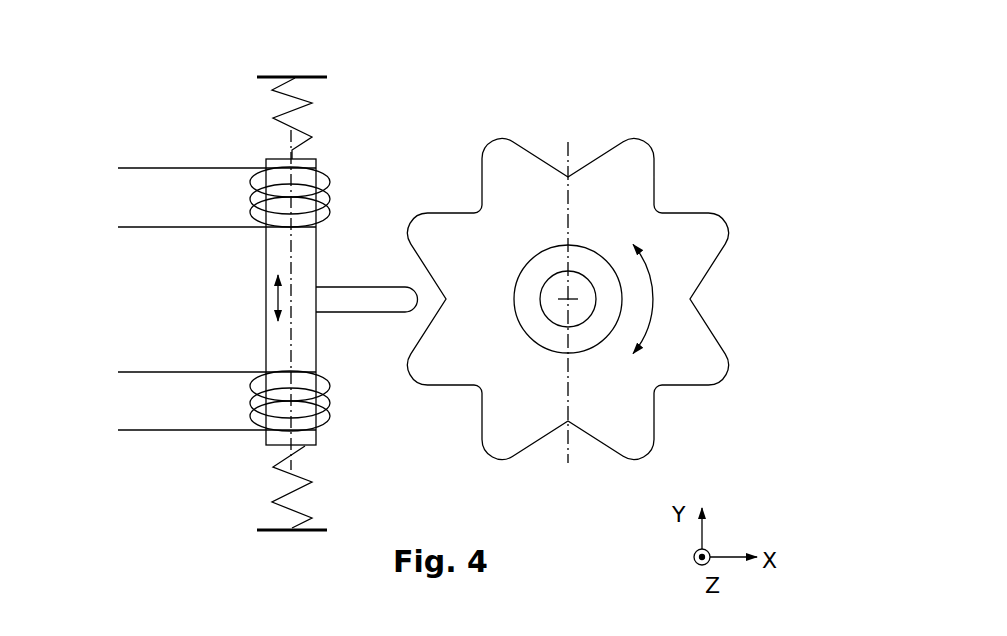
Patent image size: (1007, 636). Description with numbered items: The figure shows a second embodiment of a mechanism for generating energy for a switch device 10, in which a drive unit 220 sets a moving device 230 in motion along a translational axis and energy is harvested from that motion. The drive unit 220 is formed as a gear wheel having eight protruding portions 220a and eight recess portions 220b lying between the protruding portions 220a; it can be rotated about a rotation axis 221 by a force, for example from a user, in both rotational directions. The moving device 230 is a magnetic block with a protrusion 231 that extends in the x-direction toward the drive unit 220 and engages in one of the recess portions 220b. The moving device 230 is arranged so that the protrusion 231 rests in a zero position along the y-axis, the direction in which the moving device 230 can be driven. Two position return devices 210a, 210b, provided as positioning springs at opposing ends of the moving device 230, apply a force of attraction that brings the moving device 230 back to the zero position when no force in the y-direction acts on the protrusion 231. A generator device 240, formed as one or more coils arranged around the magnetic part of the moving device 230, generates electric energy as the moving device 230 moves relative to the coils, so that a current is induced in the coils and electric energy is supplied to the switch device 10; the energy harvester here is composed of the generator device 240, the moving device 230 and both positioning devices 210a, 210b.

The switch device 10 is at (733, 148).
The drive unit 220 is at (670, 357).
The rotation axis 221 is at (578, 287).
The protruding portions 220a is at (748, 382).
The recess portions 220b is at (713, 302).
The moving device 230 is at (268, 298).
The protrusion 231 is at (357, 273).
The generator device 240 is at (152, 163).
The position return device 210a is at (273, 122).
The position return device 210b is at (275, 475).